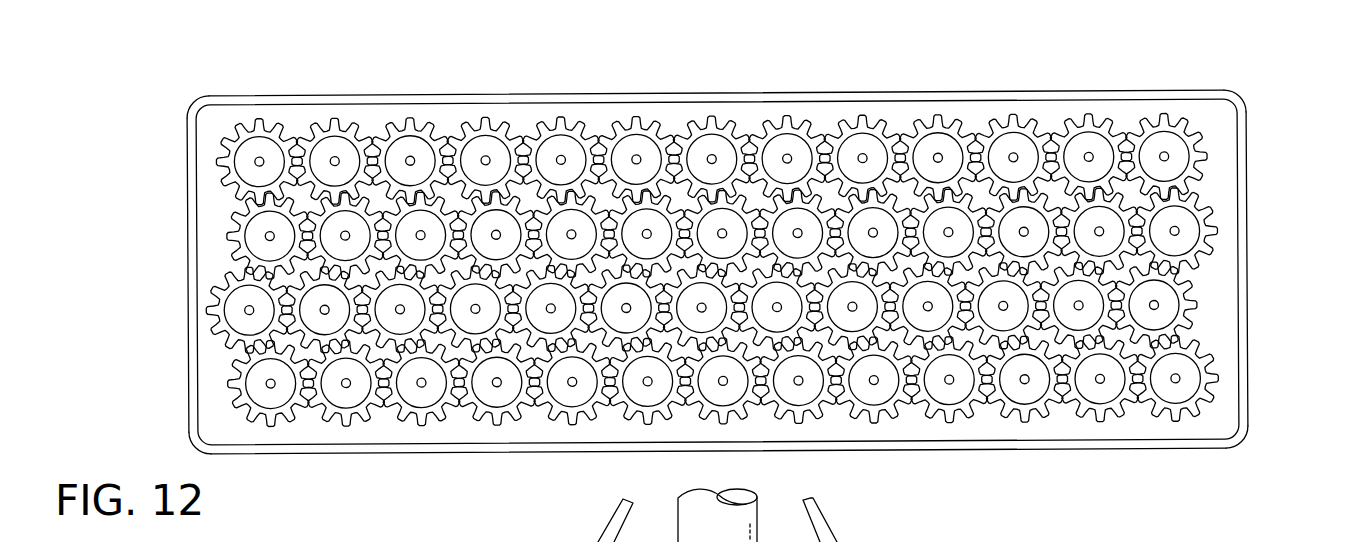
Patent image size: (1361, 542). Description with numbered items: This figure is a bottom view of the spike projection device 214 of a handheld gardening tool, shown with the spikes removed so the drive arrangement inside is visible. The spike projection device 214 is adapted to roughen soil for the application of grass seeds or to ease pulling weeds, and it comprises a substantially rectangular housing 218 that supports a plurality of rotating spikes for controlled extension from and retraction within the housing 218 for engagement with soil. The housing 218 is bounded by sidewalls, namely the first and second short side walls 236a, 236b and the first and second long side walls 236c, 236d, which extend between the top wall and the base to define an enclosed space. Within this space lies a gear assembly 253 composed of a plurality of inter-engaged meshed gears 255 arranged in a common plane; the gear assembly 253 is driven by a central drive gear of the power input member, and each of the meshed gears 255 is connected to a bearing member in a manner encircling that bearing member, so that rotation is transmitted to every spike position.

The spike projection device 214 is at (1141, 93).
The housing 218 is at (1249, 313).
The first short side wall 236a is at (189, 260).
The second short side wall 236b is at (1248, 187).
The first long side wall 236c is at (441, 96).
The second long side wall 236d is at (373, 455).
The gear assembly 253 is at (711, 275).
The inter-engaged meshed gears 255 is at (258, 119).